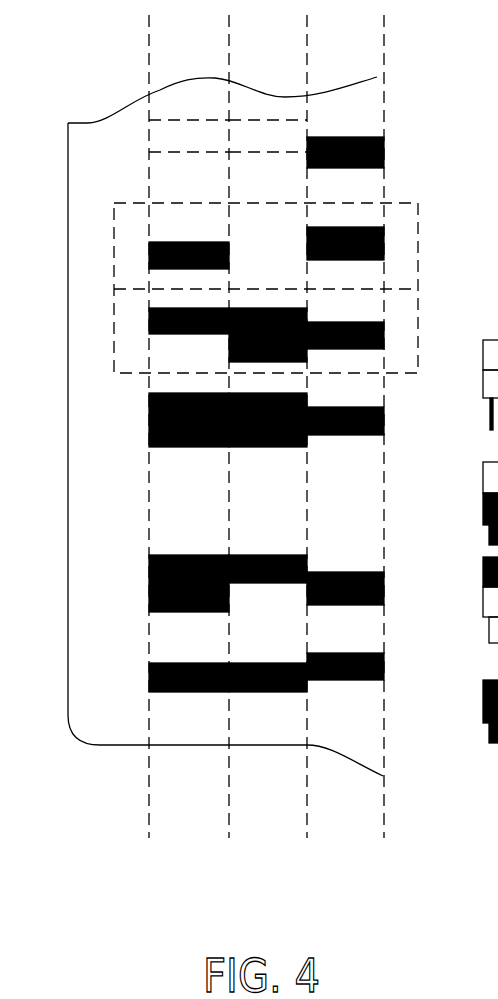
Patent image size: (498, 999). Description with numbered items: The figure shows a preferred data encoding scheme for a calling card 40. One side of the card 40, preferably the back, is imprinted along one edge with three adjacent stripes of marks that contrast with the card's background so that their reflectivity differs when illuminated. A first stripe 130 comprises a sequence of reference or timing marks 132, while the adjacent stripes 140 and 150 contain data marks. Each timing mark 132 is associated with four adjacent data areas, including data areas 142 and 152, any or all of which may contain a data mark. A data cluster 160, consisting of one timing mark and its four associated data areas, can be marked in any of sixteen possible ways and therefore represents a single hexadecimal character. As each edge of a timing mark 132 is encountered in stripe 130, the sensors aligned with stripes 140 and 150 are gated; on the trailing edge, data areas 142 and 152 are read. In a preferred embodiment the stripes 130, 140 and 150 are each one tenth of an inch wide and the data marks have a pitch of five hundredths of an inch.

The calling card 40 is at (68, 690).
The first stripe 130 is at (384, 838).
The second stripe 140 is at (307, 838).
The third stripe 150 is at (229, 838).
The timing mark 132 is at (384, 152).
The data area 142 is at (272, 140).
The data area 152 is at (192, 132).
The data cluster 160 is at (406, 278).